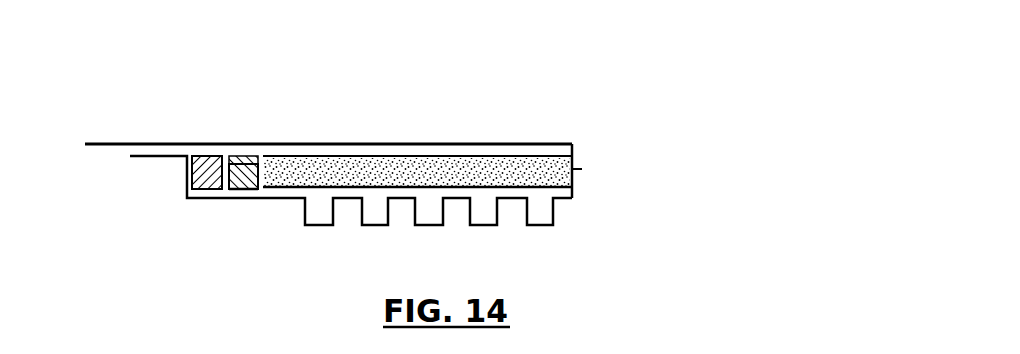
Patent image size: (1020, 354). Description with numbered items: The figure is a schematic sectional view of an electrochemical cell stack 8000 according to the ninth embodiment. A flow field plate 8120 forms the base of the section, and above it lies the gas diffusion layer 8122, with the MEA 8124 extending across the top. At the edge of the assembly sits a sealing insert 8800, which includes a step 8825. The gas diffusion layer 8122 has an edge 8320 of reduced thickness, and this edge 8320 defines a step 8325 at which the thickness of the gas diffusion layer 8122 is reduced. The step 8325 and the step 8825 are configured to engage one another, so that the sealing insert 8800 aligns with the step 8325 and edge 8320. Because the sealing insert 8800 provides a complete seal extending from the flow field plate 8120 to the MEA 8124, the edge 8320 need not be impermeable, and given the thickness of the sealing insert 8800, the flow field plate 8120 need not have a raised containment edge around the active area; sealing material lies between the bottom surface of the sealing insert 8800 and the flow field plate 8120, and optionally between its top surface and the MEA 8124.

The electrochemical cell stack 8000 is at (615, 170).
The flow field plate 8120 is at (555, 213).
The gas diffusion layer 8122 is at (435, 172).
The MEA 8124 is at (522, 145).
The sealing insert 8800 is at (208, 165).
The step 8825 is at (243, 192).
The edge 8320 is at (238, 190).
The step 8325 is at (250, 158).